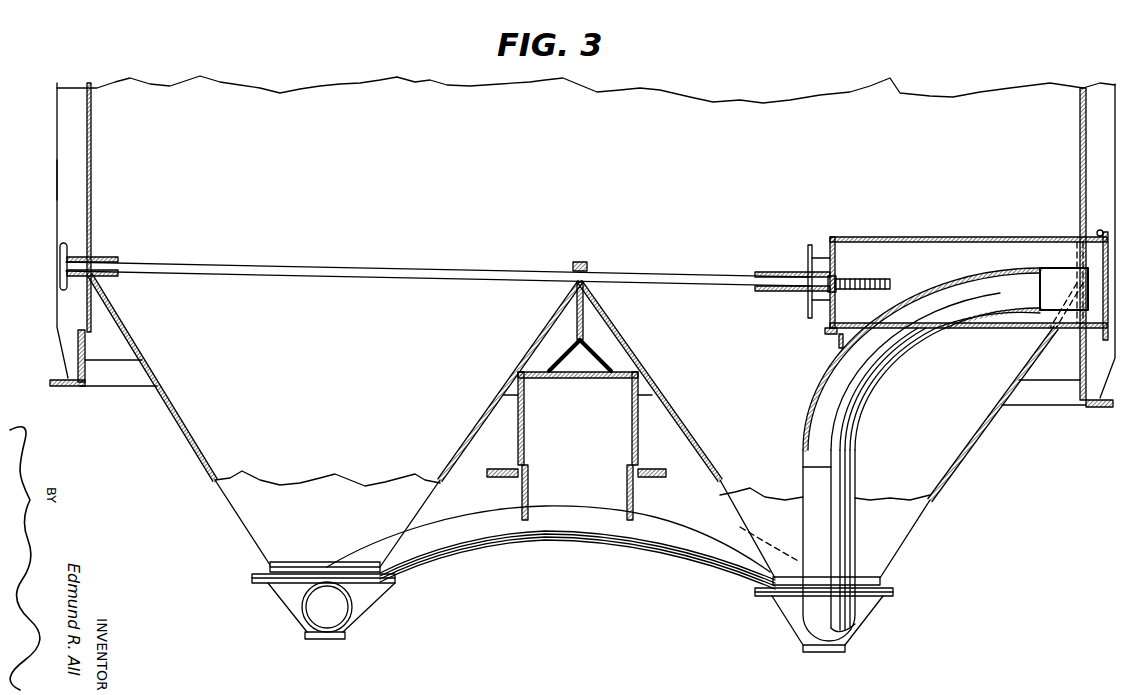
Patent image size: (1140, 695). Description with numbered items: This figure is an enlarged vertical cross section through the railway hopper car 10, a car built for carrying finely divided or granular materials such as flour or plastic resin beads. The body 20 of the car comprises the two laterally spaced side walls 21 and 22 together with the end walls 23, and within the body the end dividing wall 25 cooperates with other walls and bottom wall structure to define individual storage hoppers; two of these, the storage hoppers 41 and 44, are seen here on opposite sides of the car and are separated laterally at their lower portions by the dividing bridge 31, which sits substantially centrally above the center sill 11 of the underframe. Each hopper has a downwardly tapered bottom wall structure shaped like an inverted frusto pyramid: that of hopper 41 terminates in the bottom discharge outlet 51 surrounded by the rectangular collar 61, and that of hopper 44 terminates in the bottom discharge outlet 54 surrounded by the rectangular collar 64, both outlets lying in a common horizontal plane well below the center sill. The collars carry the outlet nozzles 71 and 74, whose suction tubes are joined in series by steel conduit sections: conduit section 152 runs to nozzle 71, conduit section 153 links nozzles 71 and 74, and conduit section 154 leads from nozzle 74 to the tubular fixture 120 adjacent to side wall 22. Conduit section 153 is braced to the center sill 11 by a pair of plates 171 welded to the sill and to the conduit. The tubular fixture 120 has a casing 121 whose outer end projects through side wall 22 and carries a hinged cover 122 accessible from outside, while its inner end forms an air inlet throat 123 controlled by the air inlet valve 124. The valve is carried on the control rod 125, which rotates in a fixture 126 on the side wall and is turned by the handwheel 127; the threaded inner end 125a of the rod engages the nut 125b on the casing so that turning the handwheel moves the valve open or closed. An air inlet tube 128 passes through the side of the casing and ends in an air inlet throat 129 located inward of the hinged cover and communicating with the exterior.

The railway hopper car 10 is at (57, 126).
The body 20 is at (57, 184).
The side wall 21 is at (91, 178).
The side wall 22 is at (1080, 140).
The end walls 23 is at (113, 353).
The end dividing wall 25 is at (718, 112).
The dividing bridge 31 is at (577, 420).
The storage hopper 41 is at (370, 399).
The storage hopper 44 is at (746, 406).
The center sill 11 is at (558, 380).
The bottom discharge outlet 51 is at (306, 568).
The bottom discharge outlet 54 is at (858, 580).
The rectangular collar 61 is at (262, 576).
The rectangular collar 64 is at (885, 590).
The outlet nozzle 71 is at (290, 608).
The outlet nozzle 74 is at (790, 616).
The tubular fixture 120 is at (918, 238).
The casing 121 is at (995, 237).
The hinged cover 122 is at (1108, 268).
The air inlet throat 123 is at (832, 245).
The air inlet valve 124 is at (808, 252).
The control rod 125 is at (418, 267).
The threaded inner end 125a is at (872, 281).
The nut 125b is at (838, 278).
The fixture 126 is at (100, 258).
The handwheel 127 is at (60, 262).
The air inlet tube 128 is at (900, 360).
The air inlet throat 129 is at (1068, 266).
The conduit section 152 is at (346, 633).
The conduit section 153 is at (580, 552).
The conduit section 154 is at (845, 468).
The plates 171 is at (528, 505).